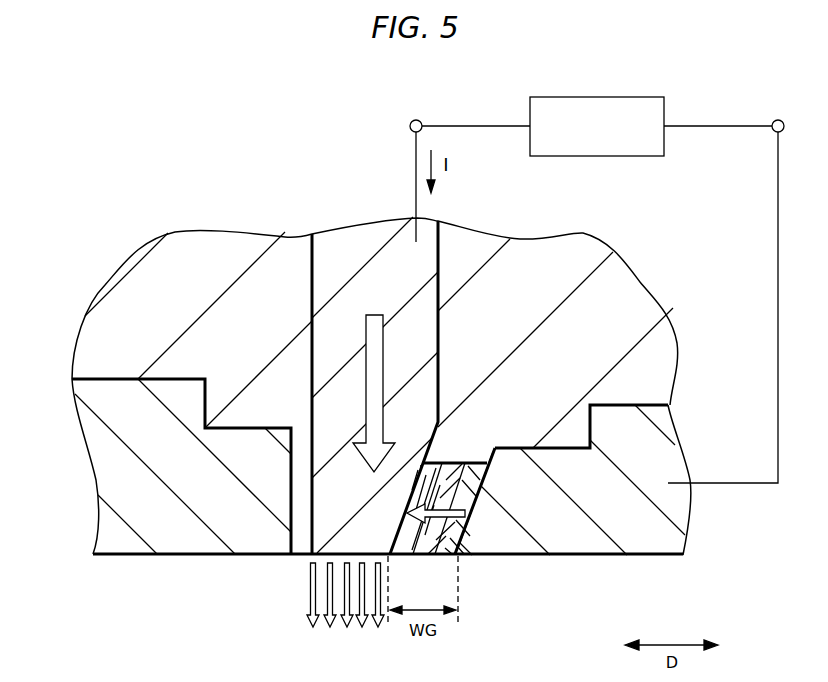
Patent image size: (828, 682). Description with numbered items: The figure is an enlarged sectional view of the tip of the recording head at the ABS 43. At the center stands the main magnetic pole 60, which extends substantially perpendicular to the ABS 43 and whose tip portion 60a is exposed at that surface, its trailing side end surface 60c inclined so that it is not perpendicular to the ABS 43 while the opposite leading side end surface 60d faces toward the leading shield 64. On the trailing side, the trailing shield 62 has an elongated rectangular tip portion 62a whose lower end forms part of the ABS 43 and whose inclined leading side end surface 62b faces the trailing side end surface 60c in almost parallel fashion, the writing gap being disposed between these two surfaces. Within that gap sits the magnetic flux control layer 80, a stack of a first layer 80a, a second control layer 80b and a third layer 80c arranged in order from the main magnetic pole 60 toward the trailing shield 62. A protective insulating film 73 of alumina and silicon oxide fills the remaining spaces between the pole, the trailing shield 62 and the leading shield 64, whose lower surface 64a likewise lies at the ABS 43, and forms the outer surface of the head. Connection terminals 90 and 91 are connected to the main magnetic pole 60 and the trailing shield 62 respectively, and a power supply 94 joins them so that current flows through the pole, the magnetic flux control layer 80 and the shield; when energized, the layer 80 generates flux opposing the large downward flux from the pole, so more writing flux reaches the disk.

The ABS 43 is at (222, 554).
The main magnetic pole 60 is at (375, 238).
The tip portion 60a is at (350, 527).
The trailing side end surface 60c is at (438, 338).
The leading side end surface 60d is at (310, 382).
The trailing shield 62 is at (662, 423).
The tip portion of the trailing shield 62a is at (663, 537).
The leading side end surface 62b is at (474, 495).
The leading shield 64 is at (98, 462).
The bottom surface of 64 64a is at (135, 540).
The protective insulating film 73 is at (633, 282).
The magnetic flux control layer 80 is at (502, 561).
The first layer 80a is at (410, 538).
The second control layer 80b is at (440, 538).
The third layer 80c is at (467, 518).
The connection terminal 90 is at (416, 119).
The connection terminal 91 is at (778, 119).
The power supply 94 is at (602, 150).